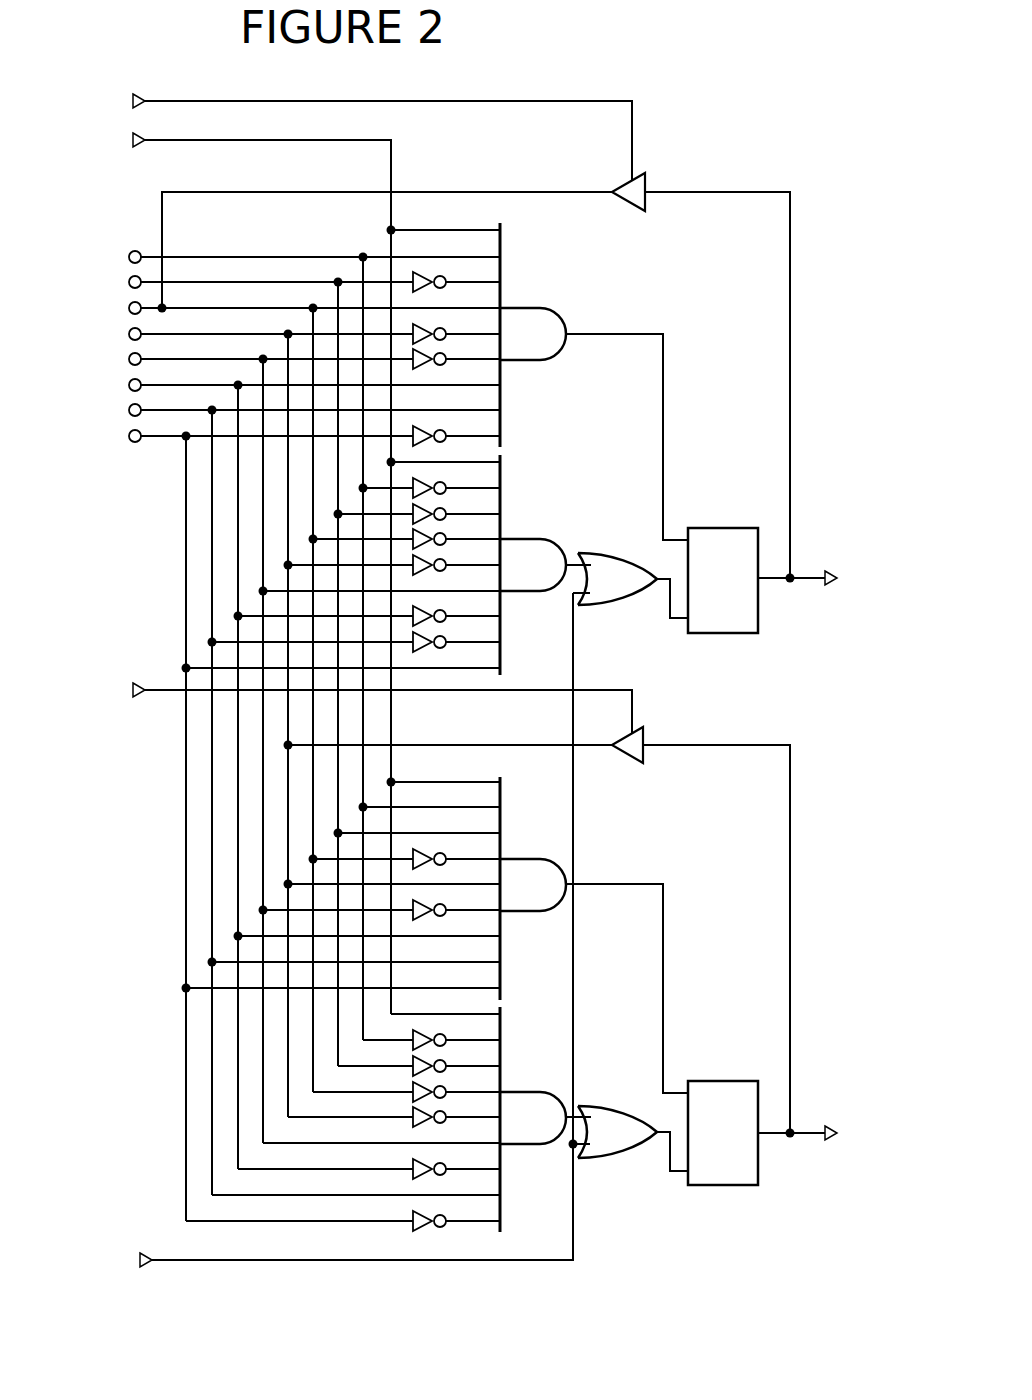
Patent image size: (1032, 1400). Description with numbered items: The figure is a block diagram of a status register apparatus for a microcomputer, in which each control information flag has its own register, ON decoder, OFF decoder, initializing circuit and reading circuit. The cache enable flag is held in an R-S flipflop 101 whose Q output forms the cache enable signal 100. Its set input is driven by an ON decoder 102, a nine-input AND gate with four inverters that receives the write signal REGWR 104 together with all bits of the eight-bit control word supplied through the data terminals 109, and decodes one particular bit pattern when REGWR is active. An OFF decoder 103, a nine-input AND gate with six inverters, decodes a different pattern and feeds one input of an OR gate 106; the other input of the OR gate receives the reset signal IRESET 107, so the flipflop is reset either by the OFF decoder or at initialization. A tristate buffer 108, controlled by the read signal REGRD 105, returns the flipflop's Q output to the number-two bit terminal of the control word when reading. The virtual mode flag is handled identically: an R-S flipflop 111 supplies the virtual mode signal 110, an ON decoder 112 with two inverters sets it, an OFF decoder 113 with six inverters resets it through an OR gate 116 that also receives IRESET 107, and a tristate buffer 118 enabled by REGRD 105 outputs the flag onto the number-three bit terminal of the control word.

The cache enable signal 100 is at (808, 578).
The R-S flipflop 101 is at (713, 528).
The ON decoder 102 is at (540, 308).
The OFF decoder 103 is at (540, 539).
The write signal REGWR 104 is at (203, 140).
The read signal REGRD 105 is at (203, 101).
The OR gate 106 is at (608, 605).
The reset signal IRESET 107 is at (265, 1260).
The tristate buffer 108 is at (645, 180).
The terminals for the 8-bit control word 109 is at (142, 236).
The virtual mode signal 110 is at (808, 1133).
The R-S flipflop 111 is at (713, 1081).
The ON decoder 112 is at (507, 857).
The OFF decoder 113 is at (507, 1093).
The OR gate 116 is at (608, 1157).
The tristate buffer 118 is at (643, 762).